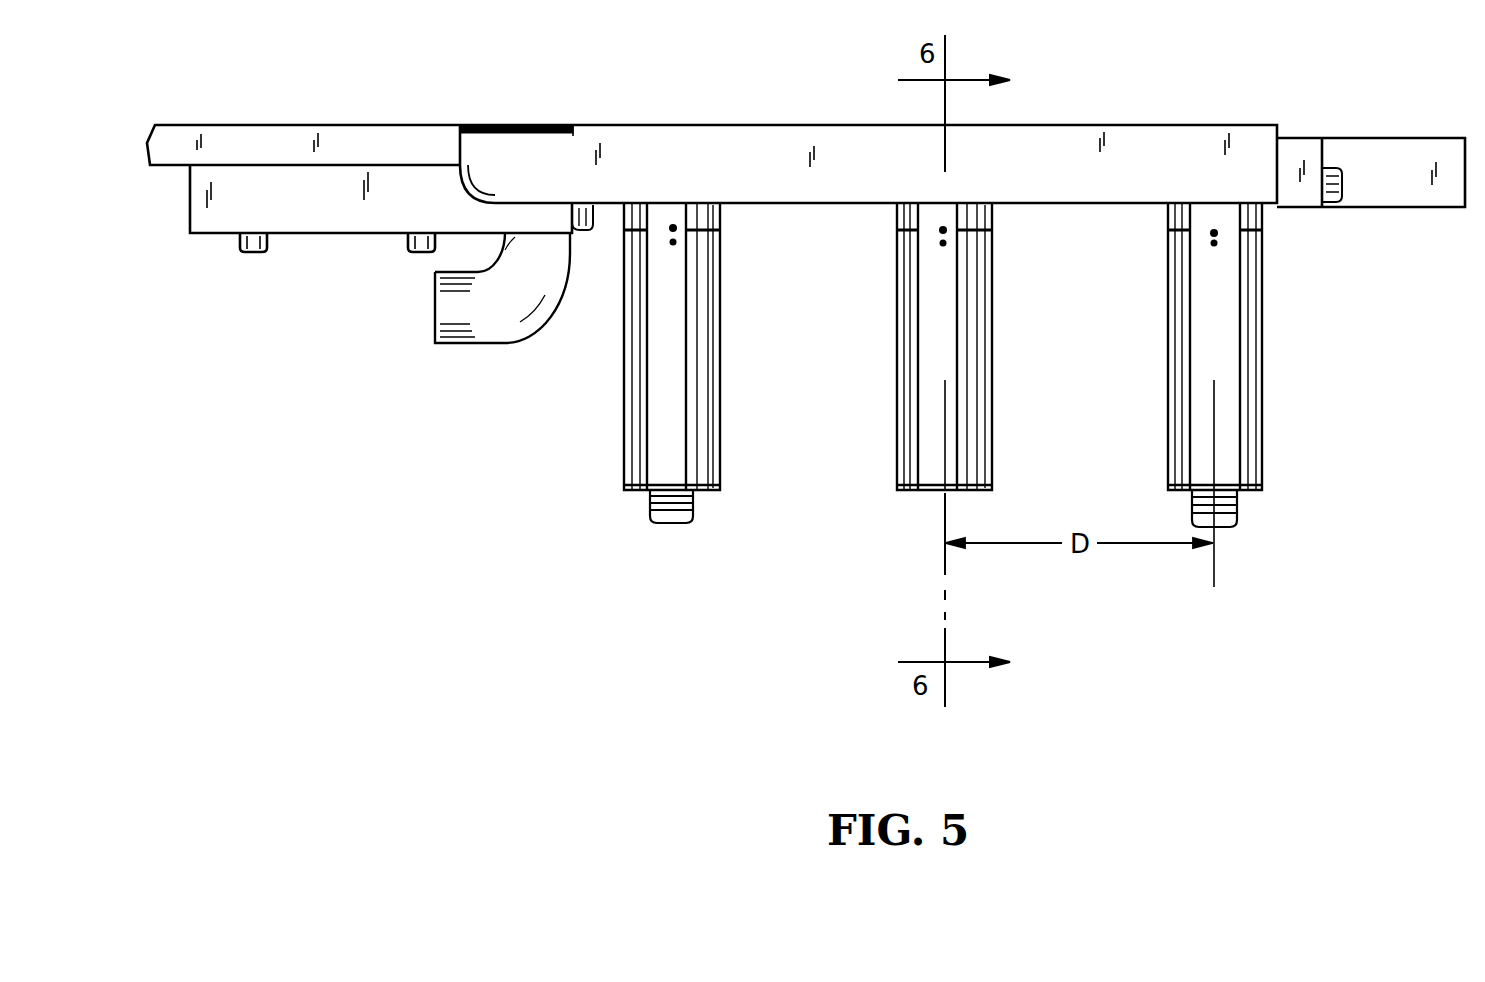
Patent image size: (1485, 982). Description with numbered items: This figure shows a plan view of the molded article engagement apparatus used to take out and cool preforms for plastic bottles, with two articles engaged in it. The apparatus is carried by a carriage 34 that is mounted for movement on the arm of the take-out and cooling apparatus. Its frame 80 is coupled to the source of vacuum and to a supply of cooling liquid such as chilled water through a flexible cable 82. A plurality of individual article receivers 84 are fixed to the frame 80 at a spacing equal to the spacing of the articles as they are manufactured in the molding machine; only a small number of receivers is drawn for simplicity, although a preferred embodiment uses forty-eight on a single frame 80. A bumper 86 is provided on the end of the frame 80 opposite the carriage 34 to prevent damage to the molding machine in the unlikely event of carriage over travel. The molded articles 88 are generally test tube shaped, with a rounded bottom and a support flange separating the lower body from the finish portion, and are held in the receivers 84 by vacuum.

The carriage 34 is at (370, 145).
The frame 80 is at (747, 147).
The flexible cable 82 is at (505, 345).
The individual article receivers 84 is at (718, 357).
The bumper 86 is at (1395, 182).
The molded articles 88 is at (670, 523).